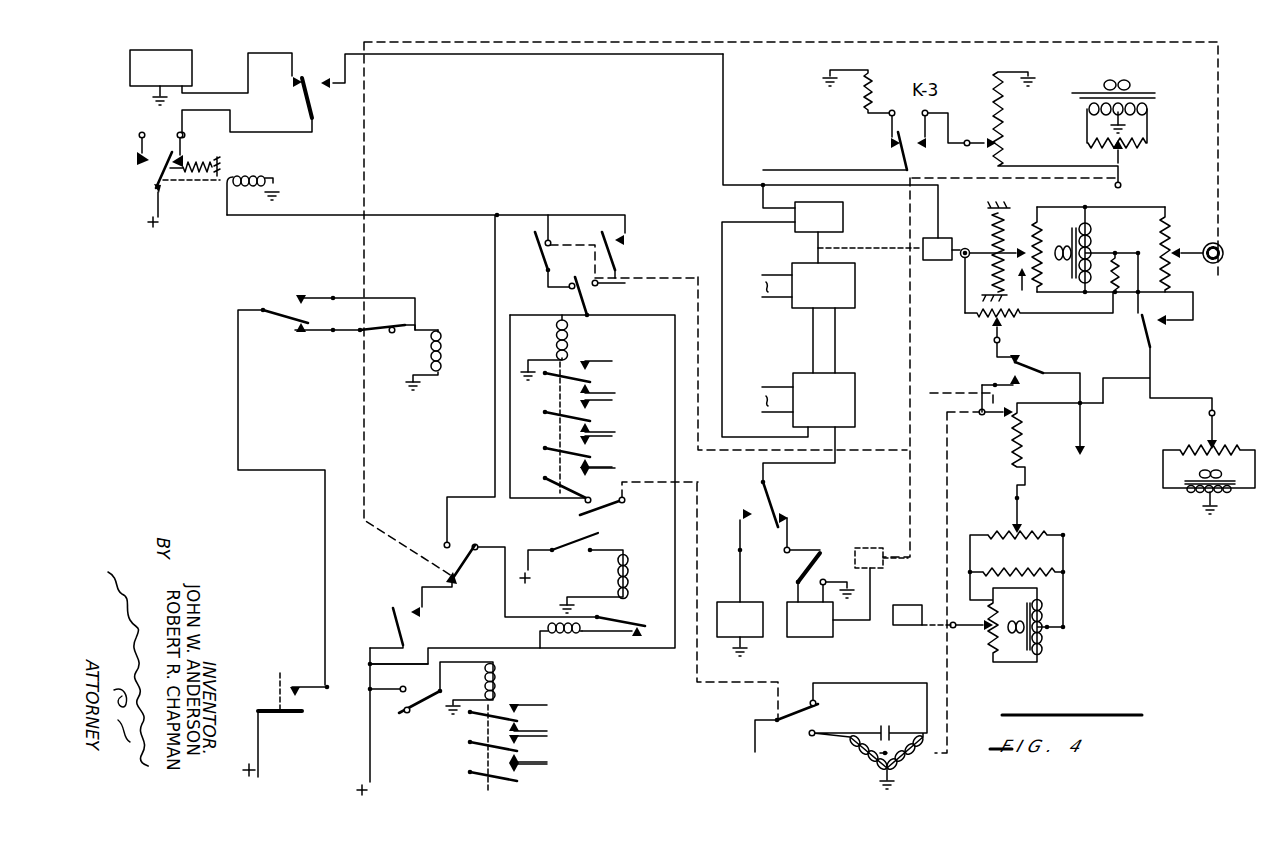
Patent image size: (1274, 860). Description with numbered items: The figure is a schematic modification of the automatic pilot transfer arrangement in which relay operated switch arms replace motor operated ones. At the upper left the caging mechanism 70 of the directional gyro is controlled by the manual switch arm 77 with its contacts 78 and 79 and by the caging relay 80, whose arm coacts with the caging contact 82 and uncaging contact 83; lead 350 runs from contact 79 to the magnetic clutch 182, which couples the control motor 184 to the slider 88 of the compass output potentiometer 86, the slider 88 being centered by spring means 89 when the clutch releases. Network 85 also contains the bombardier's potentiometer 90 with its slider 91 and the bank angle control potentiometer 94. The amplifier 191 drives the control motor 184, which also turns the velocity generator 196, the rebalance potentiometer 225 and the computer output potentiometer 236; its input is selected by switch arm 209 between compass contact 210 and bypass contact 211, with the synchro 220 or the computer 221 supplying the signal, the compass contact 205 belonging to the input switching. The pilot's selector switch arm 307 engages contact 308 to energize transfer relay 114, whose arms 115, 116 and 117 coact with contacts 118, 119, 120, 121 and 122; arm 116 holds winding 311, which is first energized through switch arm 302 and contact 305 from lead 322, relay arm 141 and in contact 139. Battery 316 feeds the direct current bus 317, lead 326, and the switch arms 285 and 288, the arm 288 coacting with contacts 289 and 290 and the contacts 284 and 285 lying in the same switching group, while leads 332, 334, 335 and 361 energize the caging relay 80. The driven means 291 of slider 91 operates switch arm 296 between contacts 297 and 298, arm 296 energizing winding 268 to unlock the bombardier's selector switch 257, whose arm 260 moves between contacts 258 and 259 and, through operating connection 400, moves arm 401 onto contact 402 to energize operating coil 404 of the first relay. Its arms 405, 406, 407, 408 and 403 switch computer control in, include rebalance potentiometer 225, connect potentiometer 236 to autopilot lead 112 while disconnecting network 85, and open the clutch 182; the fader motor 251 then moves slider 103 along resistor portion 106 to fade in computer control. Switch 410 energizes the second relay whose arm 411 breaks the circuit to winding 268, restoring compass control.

The caging mechanism 70 is at (192, 63).
The switch arm 77 is at (314, 100).
The contact 78 is at (293, 80).
The contact 79 is at (336, 70).
The caging relay 80 is at (253, 195).
The caging contact 82 is at (136, 154).
The uncaging contact 83 is at (183, 143).
The variable impedance network 85 is at (1115, 262).
The compass output potentiometer 86 is at (1230, 416).
The slider 88 is at (1222, 506).
The spring means 89 is at (988, 232).
The bombardier's potentiometer 90 is at (1176, 243).
The slider 91 is at (1213, 263).
The compass maximum bank angle control potentiometer 94 is at (1013, 319).
The motor driven slider 103 is at (992, 420).
The computer portion 106 is at (1012, 448).
The lead 112 is at (1084, 430).
The transfer relay 114 is at (498, 690).
The relay arm 115 is at (394, 612).
The relay arm 116 is at (268, 328).
The relay arm 117 is at (520, 746).
The in contact 118 is at (442, 578).
The contact 119 is at (310, 296).
The out contact 120 is at (312, 352).
The contact 121 is at (1166, 322).
The out contact 122 is at (1138, 320).
The in contact 139 is at (312, 690).
The relay arm 141 is at (273, 713).
The magnetic clutch 182 is at (924, 262).
The control motor 184 is at (856, 282).
The amplifier 191 is at (856, 396).
The velocity generator 196 is at (845, 222).
The compass contact 205 is at (786, 520).
The switch arm 209 is at (808, 570).
The compass contact 210 is at (796, 582).
The compass bypass contact 211 is at (826, 572).
The rotor winding 220 is at (828, 602).
The computer 221 is at (740, 567).
The rebalance potentiometer 225 is at (1134, 156).
The computer output potentiometer 236 is at (986, 644).
The fader motor 251 is at (894, 736).
The bombardier's selector switch 257 is at (759, 773).
The computer contact 258 is at (812, 699).
The manual contact 259 is at (812, 736).
The switch arm 260 is at (792, 726).
The winding 268 is at (548, 628).
The contact 284 is at (552, 242).
The switch blade 285 is at (535, 256).
The switch arm 288 is at (588, 300).
The contact 289 is at (548, 286).
The contact 290 is at (625, 286).
The driven means 291 is at (374, 446).
The switch arm 296 is at (466, 572).
The locking solenoid release contact 297 is at (478, 546).
The directional gyro caging contact 298 is at (446, 542).
The switch arm 302 is at (370, 328).
The contact 305 is at (396, 340).
The selector switch arm 307 is at (431, 714).
The transfer relay contact 308 is at (400, 696).
The winding 311 is at (444, 336).
The battery 316 is at (406, 774).
The D. C. bus bar 317 is at (672, 335).
The lead 322 is at (238, 396).
The lead 326 is at (368, 652).
The lead 332 is at (388, 215).
The lead 334 is at (606, 216).
The lead 335 is at (496, 214).
The lead 350 is at (408, 44).
The lead 361 is at (548, 218).
The operating connection 400 is at (722, 683).
The switch arm 401 is at (614, 510).
The contact 402 is at (562, 500).
The switch arm 403 is at (512, 418).
The operating coil 404 is at (568, 337).
The switch arm 405 is at (592, 378).
The switch arm 406 is at (592, 416).
The switch arm 407 is at (592, 453).
The switch arm 408 is at (616, 258).
The switch 410 is at (587, 536).
The switch arm 411 is at (626, 622).